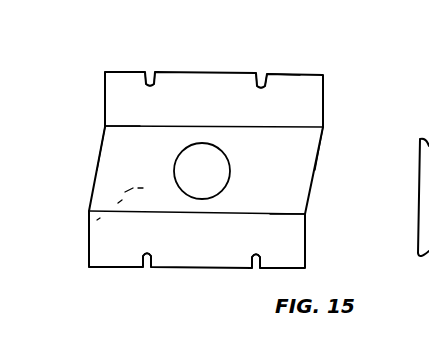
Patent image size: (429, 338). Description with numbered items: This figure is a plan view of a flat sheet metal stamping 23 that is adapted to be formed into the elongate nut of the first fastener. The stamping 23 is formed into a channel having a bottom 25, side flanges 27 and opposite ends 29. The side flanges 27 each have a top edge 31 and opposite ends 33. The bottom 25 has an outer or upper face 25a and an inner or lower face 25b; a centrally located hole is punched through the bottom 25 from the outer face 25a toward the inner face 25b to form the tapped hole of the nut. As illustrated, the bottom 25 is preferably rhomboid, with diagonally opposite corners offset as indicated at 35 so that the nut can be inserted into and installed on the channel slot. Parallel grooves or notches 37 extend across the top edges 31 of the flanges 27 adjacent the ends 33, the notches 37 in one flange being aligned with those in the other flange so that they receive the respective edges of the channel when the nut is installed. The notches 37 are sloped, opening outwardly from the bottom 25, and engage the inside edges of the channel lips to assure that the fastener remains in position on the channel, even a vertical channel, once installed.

The flat stamping 23 is at (309, 64).
The bottom 25 is at (87, 192).
The outer (upper) face 25a is at (280, 183).
The inner (lower) face 25b is at (89, 222).
The side flanges 27 is at (99, 74).
The opposite ends 29 is at (99, 156).
The top edge 31 is at (283, 73).
The opposite ends of flanges 33 is at (325, 104).
The offset corners 35 is at (104, 125).
The notches 37 is at (151, 72).